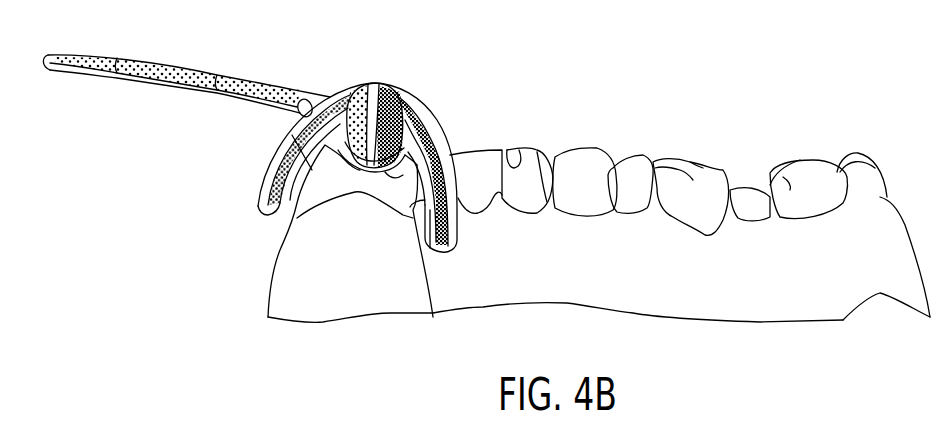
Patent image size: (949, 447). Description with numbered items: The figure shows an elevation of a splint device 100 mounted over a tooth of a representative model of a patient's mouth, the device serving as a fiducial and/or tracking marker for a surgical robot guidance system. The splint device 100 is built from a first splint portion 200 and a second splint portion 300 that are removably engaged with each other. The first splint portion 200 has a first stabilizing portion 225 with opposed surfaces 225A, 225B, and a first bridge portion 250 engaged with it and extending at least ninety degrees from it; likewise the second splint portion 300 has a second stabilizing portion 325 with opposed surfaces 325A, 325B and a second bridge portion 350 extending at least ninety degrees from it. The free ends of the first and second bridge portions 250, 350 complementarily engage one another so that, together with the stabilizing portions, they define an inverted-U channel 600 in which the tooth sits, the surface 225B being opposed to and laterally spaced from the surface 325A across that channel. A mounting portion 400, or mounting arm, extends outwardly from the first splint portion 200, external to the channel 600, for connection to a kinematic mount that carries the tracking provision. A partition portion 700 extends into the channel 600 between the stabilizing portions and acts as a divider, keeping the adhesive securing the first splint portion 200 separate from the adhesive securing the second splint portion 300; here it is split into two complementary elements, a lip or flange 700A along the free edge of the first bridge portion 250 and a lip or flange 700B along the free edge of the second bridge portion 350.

The splint device 100 is at (357, 138).
The first splint portion 200 is at (186, 59).
The first stabilizing portion 225 is at (276, 155).
The surface of first stabilizing portion 225A is at (273, 162).
The surface of first stabilizing portion 225B is at (263, 220).
The first bridge portion 250 is at (281, 115).
The second splint portion 300 is at (448, 170).
The second stabilizing portion 325 is at (464, 281).
The surface of second stabilizing portion 325A is at (395, 260).
The surface of second stabilizing portion 325B is at (501, 195).
The second bridge portion 350 is at (378, 107).
The mounting portion 400 is at (93, 95).
The channel 600 is at (340, 231).
The partition portion 700 is at (371, 201).
The partition element 700A is at (336, 220).
The partition element 700B is at (394, 194).